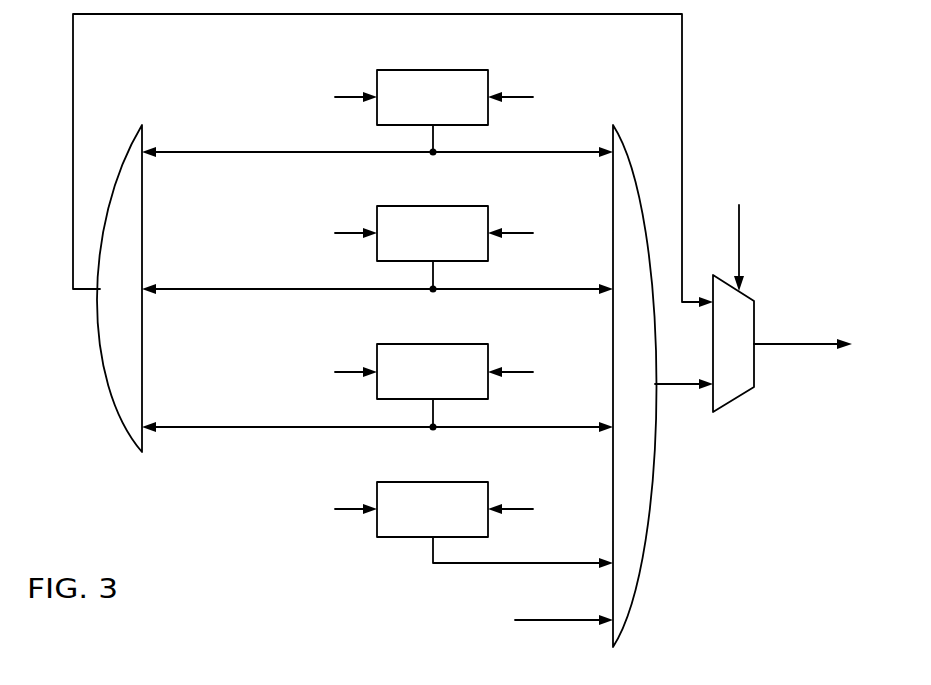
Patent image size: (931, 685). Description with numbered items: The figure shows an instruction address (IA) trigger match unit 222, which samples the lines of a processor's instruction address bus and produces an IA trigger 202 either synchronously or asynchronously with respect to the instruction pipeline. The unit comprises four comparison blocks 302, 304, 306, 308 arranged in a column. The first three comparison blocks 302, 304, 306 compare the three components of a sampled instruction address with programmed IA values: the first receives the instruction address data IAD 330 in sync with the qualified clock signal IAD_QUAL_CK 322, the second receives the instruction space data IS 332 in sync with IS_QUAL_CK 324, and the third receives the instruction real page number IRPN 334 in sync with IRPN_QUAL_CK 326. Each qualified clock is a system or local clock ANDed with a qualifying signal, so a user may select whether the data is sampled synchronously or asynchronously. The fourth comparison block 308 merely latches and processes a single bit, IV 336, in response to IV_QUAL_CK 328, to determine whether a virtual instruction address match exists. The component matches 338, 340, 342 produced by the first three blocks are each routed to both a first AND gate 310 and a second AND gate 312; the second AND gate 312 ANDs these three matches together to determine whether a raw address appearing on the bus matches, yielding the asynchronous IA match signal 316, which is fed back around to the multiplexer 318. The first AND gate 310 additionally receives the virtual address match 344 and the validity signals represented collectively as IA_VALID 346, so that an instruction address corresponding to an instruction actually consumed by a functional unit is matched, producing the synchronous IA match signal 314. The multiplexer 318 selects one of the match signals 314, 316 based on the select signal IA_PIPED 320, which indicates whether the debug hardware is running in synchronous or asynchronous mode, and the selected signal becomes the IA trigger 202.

The IA trigger 202 is at (792, 345).
The IA trigger match unit 222 is at (136, 490).
The comparison block 302 is at (432, 97).
The comparison block 304 is at (432, 233).
The comparison block 306 is at (432, 371).
The comparison block 308 is at (432, 509).
The first AND gate 310 is at (650, 535).
The second AND gate 312 is at (103, 367).
The synchronous IA match signal 314 is at (683, 384).
The asynchronous IA match signal 316 is at (682, 102).
The multiplexer 318 is at (735, 398).
The select signal 320 is at (739, 233).
The IAD_QUAL_CK qualified clock signal 322 is at (210, 70).
The IS_QUAL_CK qualified clock signal 324 is at (210, 207).
The IRPN_QUAL_CK qualified clock signal 326 is at (210, 346).
The IV_QUAL_CK qualified clock signal 328 is at (210, 484).
The IAD 330 is at (558, 70).
The IS 332 is at (558, 208).
The IRPN 334 is at (558, 346).
The IV 336 is at (558, 483).
The IAD match 338 is at (460, 153).
The IS match 340 is at (463, 290).
The IRPN match 342 is at (463, 428).
The virtual address match 344 is at (463, 564).
The IA_VALID 346 is at (407, 623).